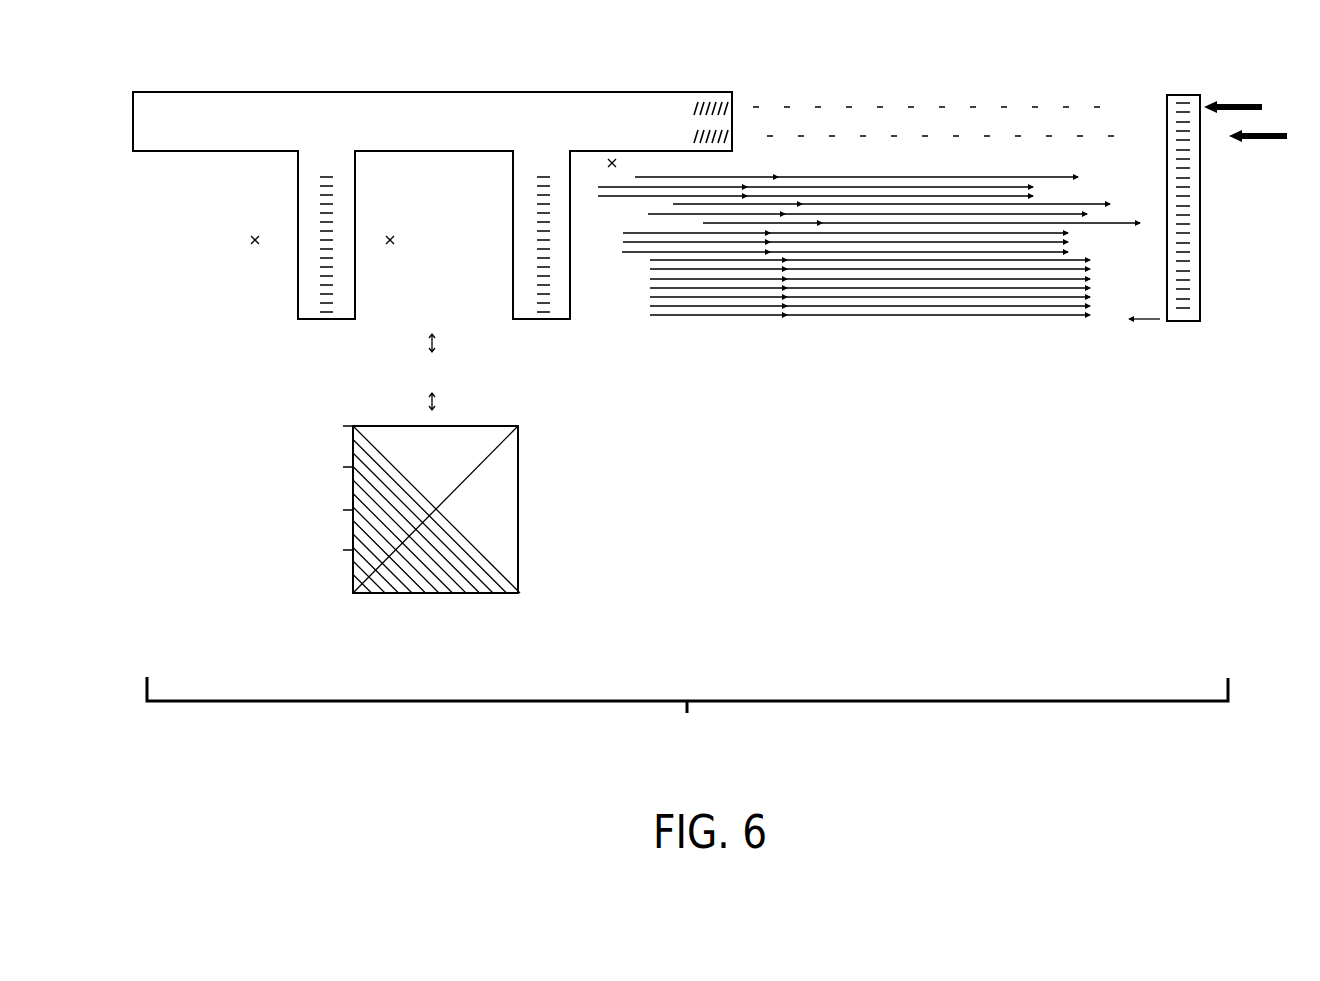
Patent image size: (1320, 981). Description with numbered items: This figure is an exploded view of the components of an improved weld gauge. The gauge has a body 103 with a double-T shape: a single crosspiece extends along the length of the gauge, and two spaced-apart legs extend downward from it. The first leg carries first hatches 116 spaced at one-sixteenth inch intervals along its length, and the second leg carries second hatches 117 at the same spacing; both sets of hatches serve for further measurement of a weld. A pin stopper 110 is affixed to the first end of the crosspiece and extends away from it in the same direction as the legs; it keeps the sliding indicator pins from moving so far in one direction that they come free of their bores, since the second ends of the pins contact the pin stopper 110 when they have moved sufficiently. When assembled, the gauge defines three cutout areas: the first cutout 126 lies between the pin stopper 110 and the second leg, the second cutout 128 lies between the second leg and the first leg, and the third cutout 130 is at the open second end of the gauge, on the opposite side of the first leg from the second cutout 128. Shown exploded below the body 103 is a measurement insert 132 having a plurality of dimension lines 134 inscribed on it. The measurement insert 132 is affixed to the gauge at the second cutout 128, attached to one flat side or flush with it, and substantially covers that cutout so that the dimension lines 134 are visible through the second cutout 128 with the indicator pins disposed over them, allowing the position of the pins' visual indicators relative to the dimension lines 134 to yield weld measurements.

The body 103 is at (552, 93).
The first hatches 116 is at (327, 177).
The second hatches 117 is at (547, 177).
The first cutout 126 is at (612, 163).
The second cutout 128 is at (390, 240).
The third cutout 130 is at (255, 240).
The pin stopper 110 is at (1195, 211).
The measurement insert 132 is at (499, 559).
The dimension lines 134 is at (408, 575).